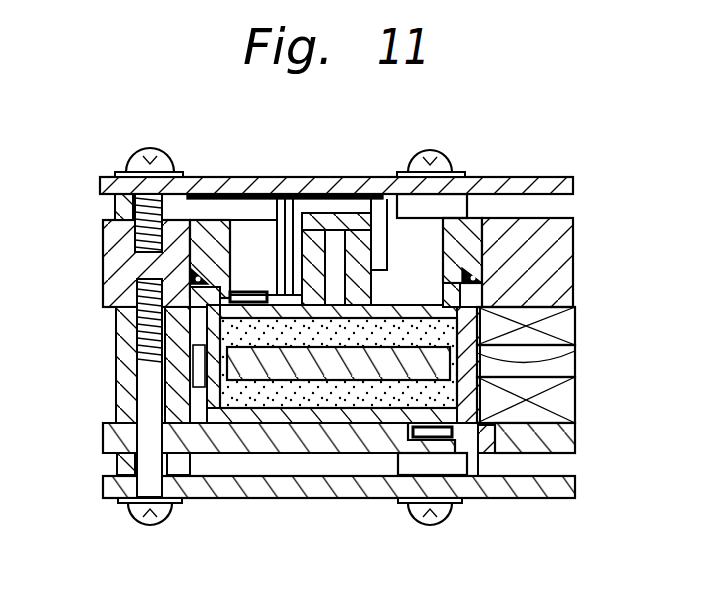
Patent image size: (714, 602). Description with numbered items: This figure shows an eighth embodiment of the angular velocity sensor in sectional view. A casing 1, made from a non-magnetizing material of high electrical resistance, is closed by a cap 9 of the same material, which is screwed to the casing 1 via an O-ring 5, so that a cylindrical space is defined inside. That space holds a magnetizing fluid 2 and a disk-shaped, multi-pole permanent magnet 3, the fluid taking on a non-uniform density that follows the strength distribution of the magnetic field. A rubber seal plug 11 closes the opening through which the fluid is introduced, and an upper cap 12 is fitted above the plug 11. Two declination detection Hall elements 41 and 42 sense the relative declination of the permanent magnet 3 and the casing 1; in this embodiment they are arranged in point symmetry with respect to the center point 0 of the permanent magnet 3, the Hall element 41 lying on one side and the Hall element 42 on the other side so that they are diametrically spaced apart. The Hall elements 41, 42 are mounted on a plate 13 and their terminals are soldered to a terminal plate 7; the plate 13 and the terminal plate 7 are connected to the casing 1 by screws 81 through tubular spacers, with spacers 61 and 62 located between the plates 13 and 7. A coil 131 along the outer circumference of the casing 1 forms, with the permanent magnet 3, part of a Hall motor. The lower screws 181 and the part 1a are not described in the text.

The casing 1 is at (560, 248).
The lower coil section 1a is at (575, 394).
The magnetizing fluid 2 is at (575, 353).
The permanent magnet 3 is at (290, 382).
The center point 0 is at (347, 367).
The O-ring 5 is at (192, 276).
The terminal plate 7 is at (550, 485).
The cap 9 is at (468, 216).
The seal plug 11 is at (355, 215).
The upper cap 12 is at (330, 195).
The plate 13 is at (560, 444).
The Hall element 41 is at (250, 290).
The Hall element 42 is at (452, 440).
The tubular spacer 61 is at (120, 207).
The tubular spacer 62 is at (460, 232).
The screw 81 is at (150, 150).
The coil 131 is at (560, 330).
The lower screw 181 is at (150, 522).